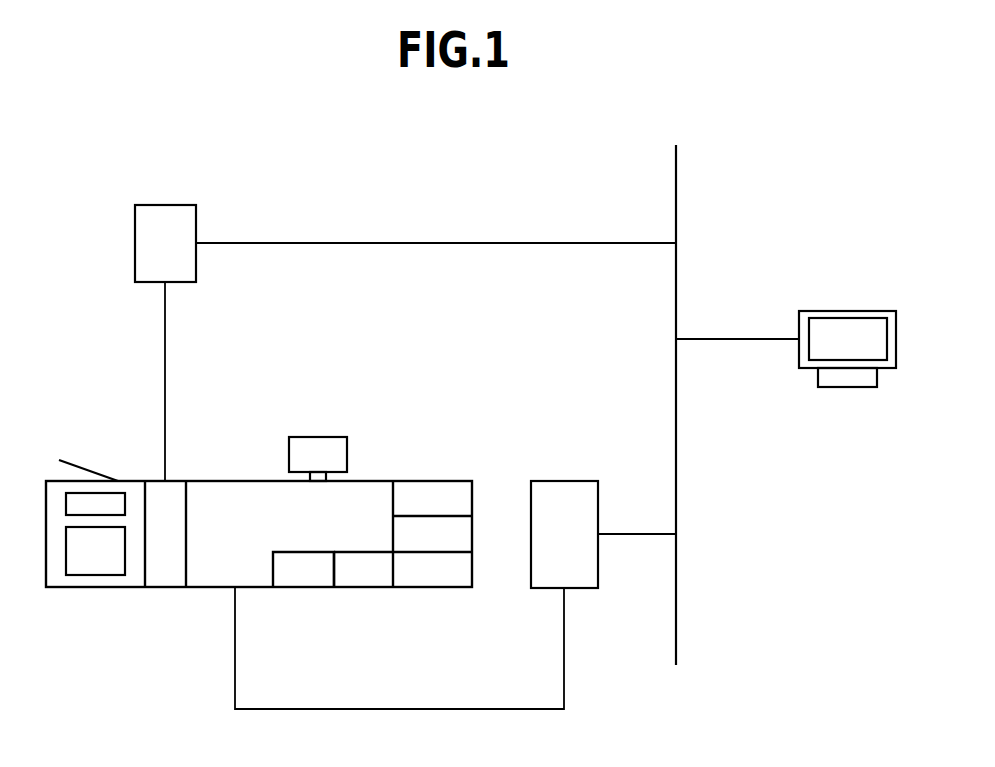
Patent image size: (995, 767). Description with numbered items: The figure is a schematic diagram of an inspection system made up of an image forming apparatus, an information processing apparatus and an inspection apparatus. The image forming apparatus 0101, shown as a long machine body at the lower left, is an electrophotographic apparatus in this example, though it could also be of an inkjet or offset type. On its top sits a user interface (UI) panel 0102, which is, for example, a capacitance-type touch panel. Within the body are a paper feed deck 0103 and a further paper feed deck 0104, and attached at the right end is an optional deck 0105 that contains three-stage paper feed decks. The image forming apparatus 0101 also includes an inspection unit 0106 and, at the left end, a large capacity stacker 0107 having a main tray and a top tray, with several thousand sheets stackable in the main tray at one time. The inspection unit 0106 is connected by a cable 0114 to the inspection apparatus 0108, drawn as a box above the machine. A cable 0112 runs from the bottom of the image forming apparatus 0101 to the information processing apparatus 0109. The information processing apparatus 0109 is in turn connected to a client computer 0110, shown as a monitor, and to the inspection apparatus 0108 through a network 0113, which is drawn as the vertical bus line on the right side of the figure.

The image forming apparatus 0101 is at (251, 516).
The user interface (UI) panel 0102 is at (320, 437).
The paper feed deck 0103 is at (300, 587).
The paper feed deck 0104 is at (373, 587).
The optional deck 0105 is at (432, 481).
The inspection unit 0106 is at (167, 587).
The large capacity stacker 0107 is at (60, 587).
The inspection apparatus 0108 is at (167, 205).
The information processing apparatus 0109 is at (570, 481).
The client computer 0110 is at (850, 311).
The cable 0112 is at (467, 708).
The network 0113 is at (676, 615).
The cable 0114 is at (163, 368).